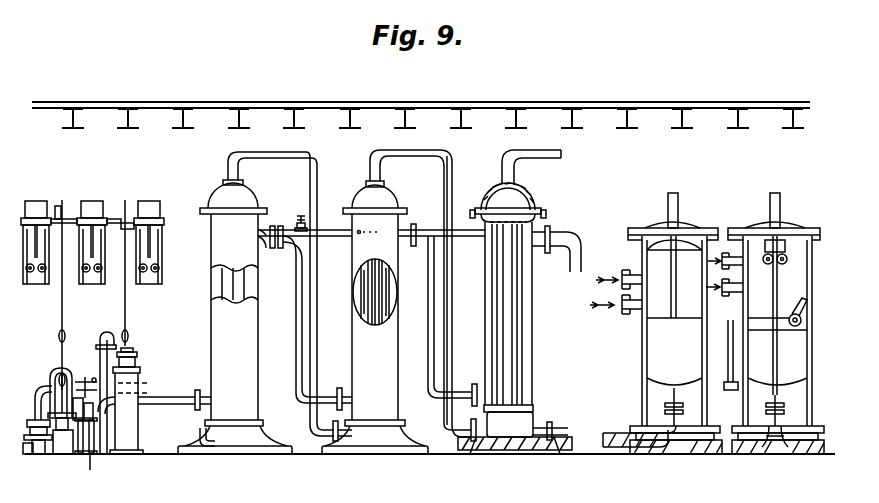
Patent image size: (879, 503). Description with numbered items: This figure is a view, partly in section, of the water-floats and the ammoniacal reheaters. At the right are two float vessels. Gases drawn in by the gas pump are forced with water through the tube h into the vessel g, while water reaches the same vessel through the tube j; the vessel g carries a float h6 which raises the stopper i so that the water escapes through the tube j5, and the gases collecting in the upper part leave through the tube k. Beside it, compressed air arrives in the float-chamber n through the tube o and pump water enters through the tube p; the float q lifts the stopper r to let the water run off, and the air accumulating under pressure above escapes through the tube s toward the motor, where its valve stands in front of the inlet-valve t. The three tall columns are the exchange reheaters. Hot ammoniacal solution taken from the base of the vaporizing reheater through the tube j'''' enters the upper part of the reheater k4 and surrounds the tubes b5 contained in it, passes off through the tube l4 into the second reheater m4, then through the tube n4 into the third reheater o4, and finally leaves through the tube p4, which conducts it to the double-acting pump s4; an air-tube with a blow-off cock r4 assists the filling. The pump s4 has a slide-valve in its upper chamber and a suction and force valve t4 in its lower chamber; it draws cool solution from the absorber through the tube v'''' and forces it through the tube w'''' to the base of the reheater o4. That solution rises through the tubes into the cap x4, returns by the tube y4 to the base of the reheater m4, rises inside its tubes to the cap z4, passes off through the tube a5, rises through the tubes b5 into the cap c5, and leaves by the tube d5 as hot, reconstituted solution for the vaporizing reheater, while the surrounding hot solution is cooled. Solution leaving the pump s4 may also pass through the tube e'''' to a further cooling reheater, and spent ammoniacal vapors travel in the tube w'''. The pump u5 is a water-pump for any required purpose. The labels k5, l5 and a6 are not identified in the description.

The third reheater o4 is at (235, 317).
The cap or cover x4 is at (286, 214).
The air-tube with blow-off cock r4 is at (292, 222).
The tube y4 is at (308, 430).
The tube n4 is at (280, 248).
The second reheater m4 is at (375, 331).
The cap or cover z4 is at (375, 194).
The tube a5 is at (436, 432).
The tube l4 is at (414, 246).
The cap or cover c5 is at (515, 318).
The tube k5 is at (510, 314).
The tubes b5 is at (522, 376).
The tube l5 is at (495, 376).
The tube d5 is at (540, 165).
The tube j'''' is at (556, 255).
The float-chamber n is at (675, 338).
The tube s is at (679, 206).
The float q is at (674, 351).
The stopper r is at (649, 417).
The tube o is at (619, 273).
The tube p is at (616, 310).
The vessel g is at (774, 338).
The tube k is at (780, 207).
The tube h is at (725, 254).
The tube j is at (724, 296).
The float h6 is at (802, 328).
The stopper i is at (779, 412).
The tube j5 is at (772, 450).
The water-pump u5 is at (130, 401).
The tube p4 is at (198, 390).
The tube w''' is at (155, 393).
The tube w'''' is at (72, 395).
The inlet-valve t is at (34, 437).
The pump s4 is at (62, 411).
The tube e'''' is at (89, 398).
The reheater k4 is at (93, 436).
The tube v'''' is at (37, 464).
The suction and force valve t4 is at (63, 463).
The pipe a6 is at (95, 466).